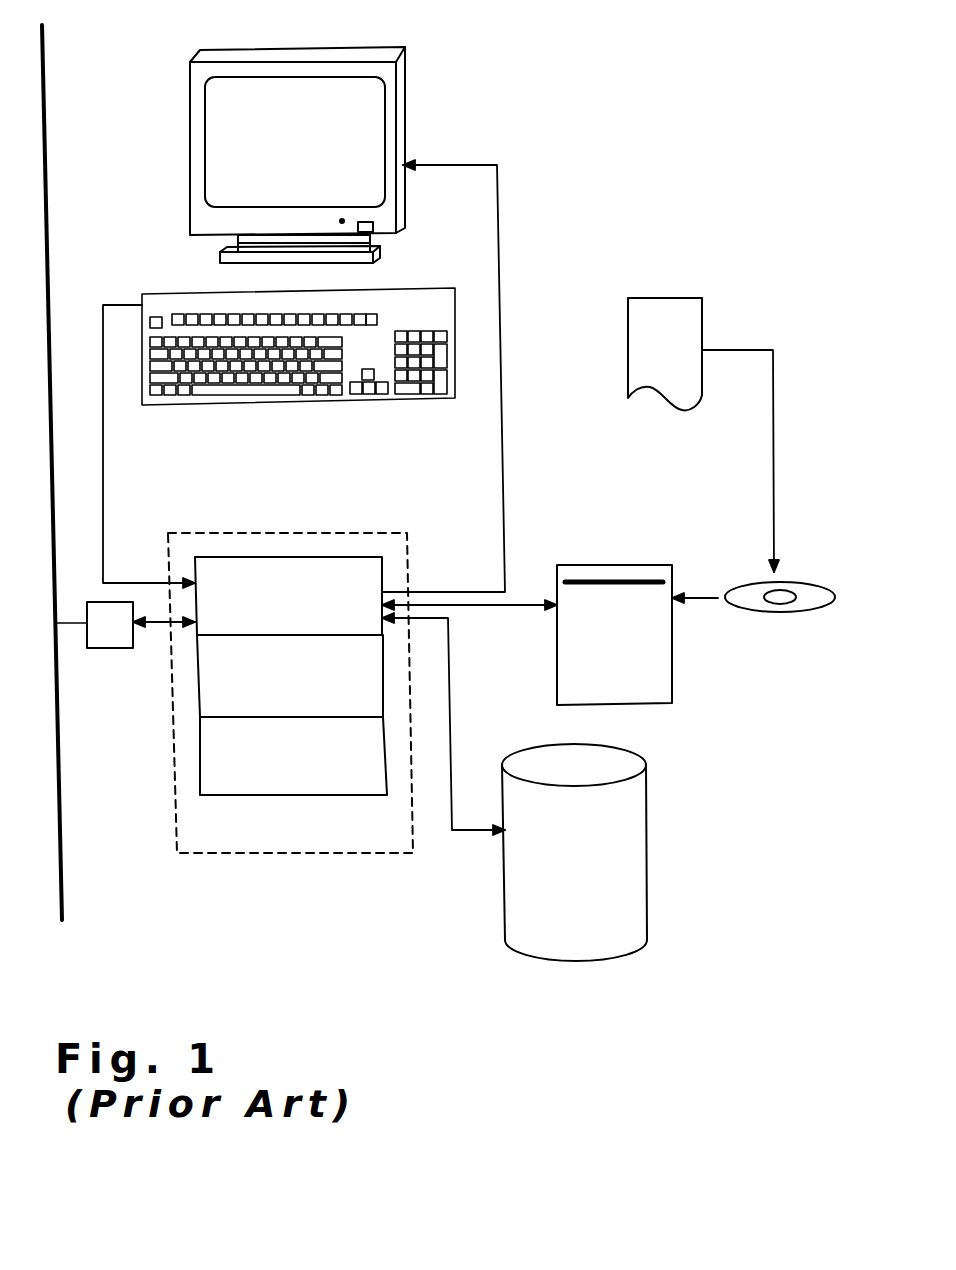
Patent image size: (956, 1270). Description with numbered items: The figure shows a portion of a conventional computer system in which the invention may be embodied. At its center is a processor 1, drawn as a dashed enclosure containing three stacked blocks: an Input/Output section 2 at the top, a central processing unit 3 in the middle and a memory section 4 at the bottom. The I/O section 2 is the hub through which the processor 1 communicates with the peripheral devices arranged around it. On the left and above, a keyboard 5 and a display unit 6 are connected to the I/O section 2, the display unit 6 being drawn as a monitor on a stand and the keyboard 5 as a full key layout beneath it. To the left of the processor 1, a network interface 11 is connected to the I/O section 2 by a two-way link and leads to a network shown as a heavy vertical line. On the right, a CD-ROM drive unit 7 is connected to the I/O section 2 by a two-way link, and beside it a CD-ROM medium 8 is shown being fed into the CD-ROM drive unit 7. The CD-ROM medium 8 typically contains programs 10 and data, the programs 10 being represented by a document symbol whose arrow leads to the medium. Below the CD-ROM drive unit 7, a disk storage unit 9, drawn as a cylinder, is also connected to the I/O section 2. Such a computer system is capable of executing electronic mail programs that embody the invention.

The processor 1 is at (190, 533).
The Input/Output section 2 is at (315, 558).
The central processing unit 3 is at (203, 672).
The memory section 4 is at (205, 755).
The keyboard 5 is at (207, 405).
The display unit 6 is at (189, 129).
The CD-ROM drive unit 7 is at (606, 654).
The CD-ROM medium 8 is at (777, 612).
The disk storage unit 9 is at (575, 875).
The programs 10 is at (653, 353).
The network interface 11 is at (121, 636).